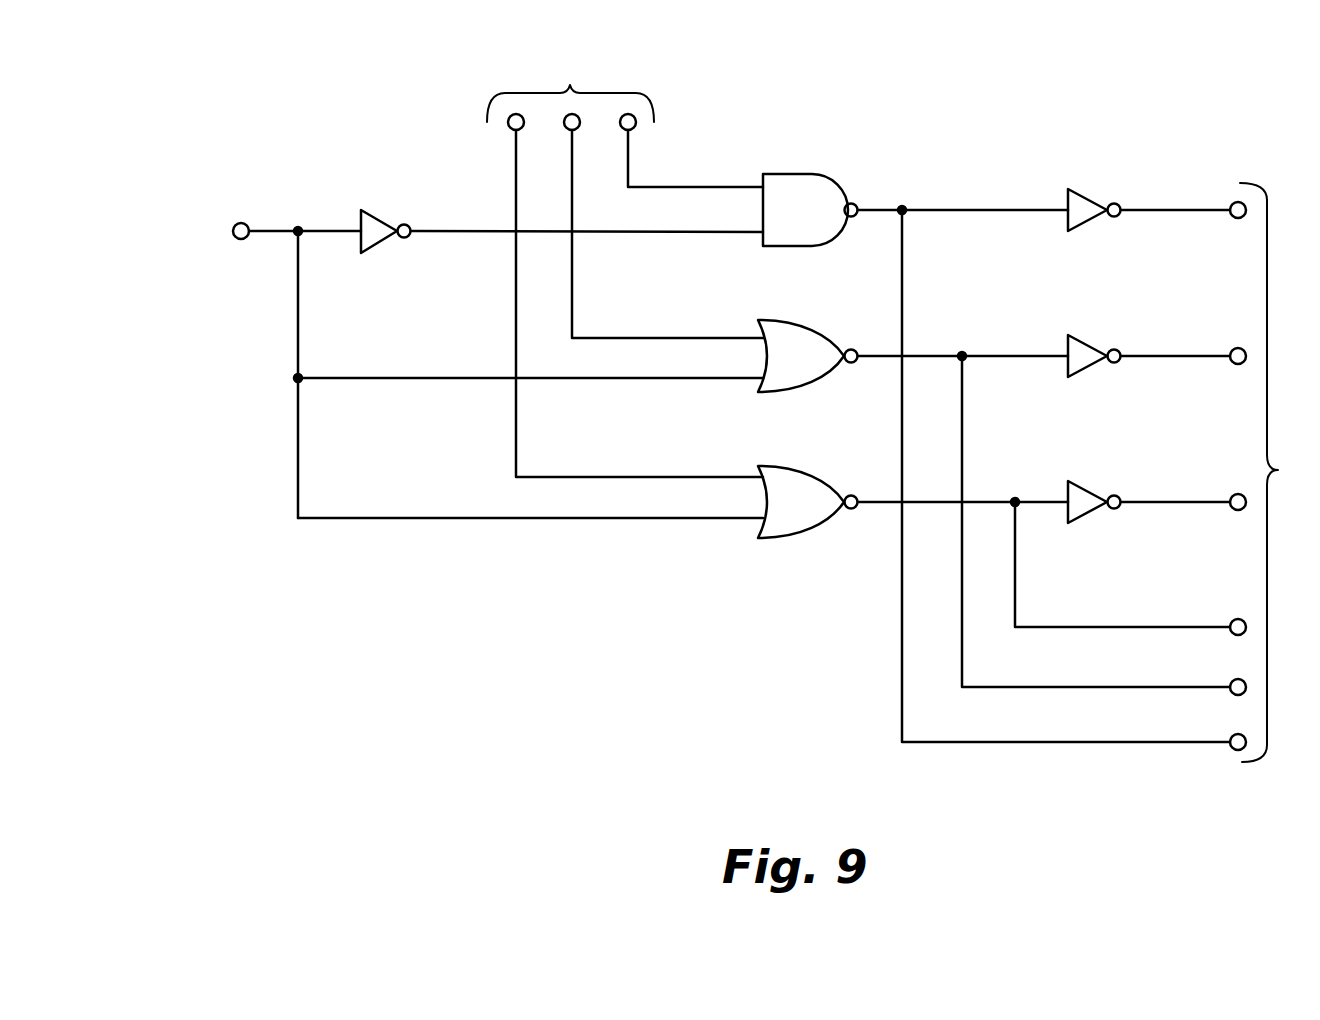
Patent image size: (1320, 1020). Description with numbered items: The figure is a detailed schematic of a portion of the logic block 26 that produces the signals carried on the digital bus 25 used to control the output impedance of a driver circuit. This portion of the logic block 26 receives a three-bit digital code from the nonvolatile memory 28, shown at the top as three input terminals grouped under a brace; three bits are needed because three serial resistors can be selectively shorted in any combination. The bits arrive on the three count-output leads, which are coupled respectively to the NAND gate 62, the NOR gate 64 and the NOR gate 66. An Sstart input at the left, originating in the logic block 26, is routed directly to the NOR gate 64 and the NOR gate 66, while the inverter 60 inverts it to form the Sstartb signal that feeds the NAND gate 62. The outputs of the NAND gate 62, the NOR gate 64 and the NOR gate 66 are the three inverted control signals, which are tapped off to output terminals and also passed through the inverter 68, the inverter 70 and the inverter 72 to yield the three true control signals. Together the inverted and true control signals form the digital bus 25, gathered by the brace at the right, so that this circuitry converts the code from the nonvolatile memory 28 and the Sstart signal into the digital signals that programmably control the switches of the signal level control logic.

The logic block 26 is at (350, 105).
The nonvolatile memory 28 is at (625, 267).
The inverter 60 is at (385, 218).
The NAND gate 62 is at (803, 174).
The NOR gate 64 is at (803, 320).
The NOR gate 66 is at (812, 466).
The inverter 68 is at (1083, 189).
The inverter 70 is at (1090, 335).
The inverter 72 is at (1095, 481).
The digital bus 25 is at (1270, 472).